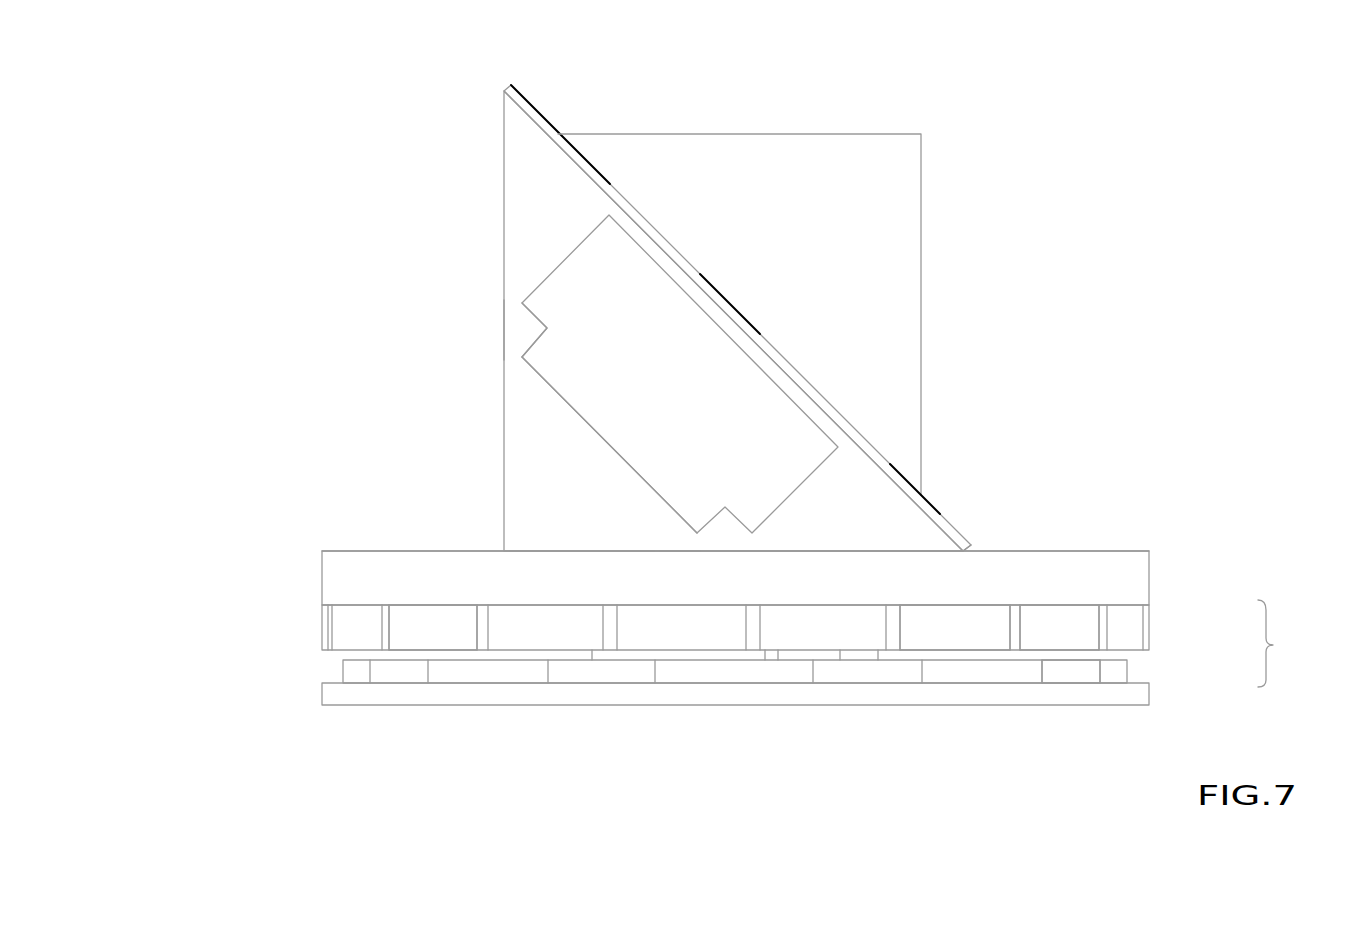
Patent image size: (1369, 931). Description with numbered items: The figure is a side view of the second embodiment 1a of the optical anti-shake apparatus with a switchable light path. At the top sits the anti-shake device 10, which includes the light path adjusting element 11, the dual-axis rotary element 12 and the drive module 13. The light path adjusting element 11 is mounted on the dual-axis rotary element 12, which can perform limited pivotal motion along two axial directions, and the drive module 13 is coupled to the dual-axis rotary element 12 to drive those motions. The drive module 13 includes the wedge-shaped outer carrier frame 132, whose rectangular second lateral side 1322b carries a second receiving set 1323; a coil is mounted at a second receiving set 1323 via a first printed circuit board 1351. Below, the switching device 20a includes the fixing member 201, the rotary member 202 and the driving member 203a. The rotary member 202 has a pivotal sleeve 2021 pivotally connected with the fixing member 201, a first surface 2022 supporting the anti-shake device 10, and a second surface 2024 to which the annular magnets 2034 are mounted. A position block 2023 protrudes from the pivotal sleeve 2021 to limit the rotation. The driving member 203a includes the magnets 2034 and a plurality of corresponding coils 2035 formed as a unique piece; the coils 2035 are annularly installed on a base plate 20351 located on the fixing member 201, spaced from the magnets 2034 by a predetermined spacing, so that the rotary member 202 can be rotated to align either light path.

The second embodiment 1a is at (1033, 245).
The anti-shake device 10 is at (575, 101).
The light path adjusting element 11 is at (872, 135).
The dual-axis rotary element 12 is at (940, 513).
The drive module 13 is at (470, 214).
The outer carrier frame 132 is at (533, 502).
The second lateral side 1322b is at (508, 327).
The second receiving set 1323 is at (609, 448).
The first printed circuit board 1351 is at (610, 397).
The switching device 20a is at (1107, 510).
The fixing member 201 is at (330, 697).
The rotary member 202 is at (325, 579).
The pivotal sleeve 2021 is at (682, 657).
The first surface 2022 is at (347, 550).
The position block 2023 is at (803, 655).
The second surface 2024 is at (347, 605).
The driving member 203a is at (1293, 643).
The magnet 2034 is at (425, 637).
The coil 2035 is at (732, 668).
The base plate 20351 is at (1077, 673).